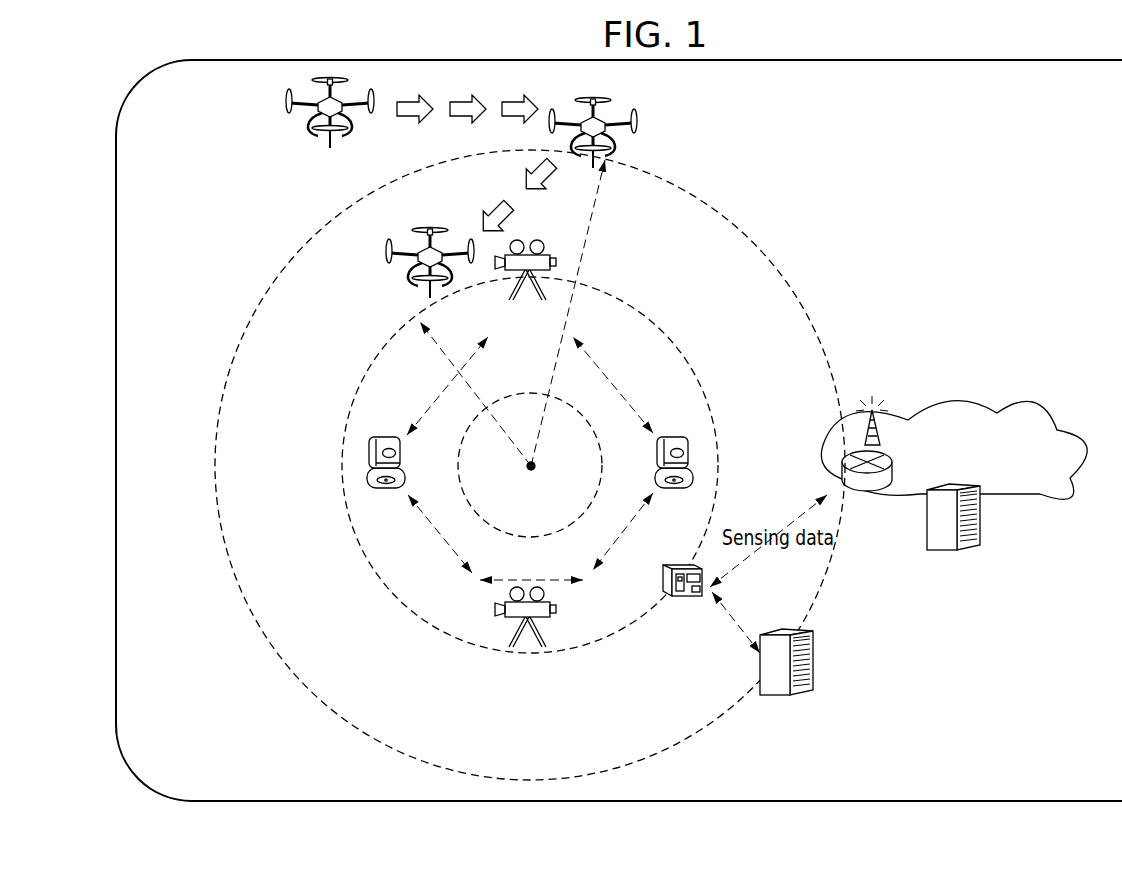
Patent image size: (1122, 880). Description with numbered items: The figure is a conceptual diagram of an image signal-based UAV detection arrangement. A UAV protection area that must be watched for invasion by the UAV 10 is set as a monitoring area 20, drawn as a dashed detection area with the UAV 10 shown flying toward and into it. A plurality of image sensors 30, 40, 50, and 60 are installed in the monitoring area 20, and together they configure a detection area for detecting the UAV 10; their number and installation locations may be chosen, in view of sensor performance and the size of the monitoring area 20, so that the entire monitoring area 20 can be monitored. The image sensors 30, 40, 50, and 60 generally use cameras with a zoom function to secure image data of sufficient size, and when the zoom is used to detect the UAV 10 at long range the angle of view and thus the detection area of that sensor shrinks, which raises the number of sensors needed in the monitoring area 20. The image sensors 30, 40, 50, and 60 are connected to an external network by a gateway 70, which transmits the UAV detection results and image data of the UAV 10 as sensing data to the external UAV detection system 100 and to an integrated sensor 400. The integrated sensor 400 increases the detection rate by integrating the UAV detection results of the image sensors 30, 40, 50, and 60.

The UAV 10 is at (312, 112).
The monitoring area 20 is at (746, 229).
The image sensor 30 is at (541, 246).
The image sensor 40 is at (386, 437).
The image sensor 50 is at (550, 612).
The image sensor 60 is at (673, 437).
The gateway 70 is at (663, 575).
The UAV detection system 100 is at (981, 517).
The integrated sensor 400 is at (813, 660).